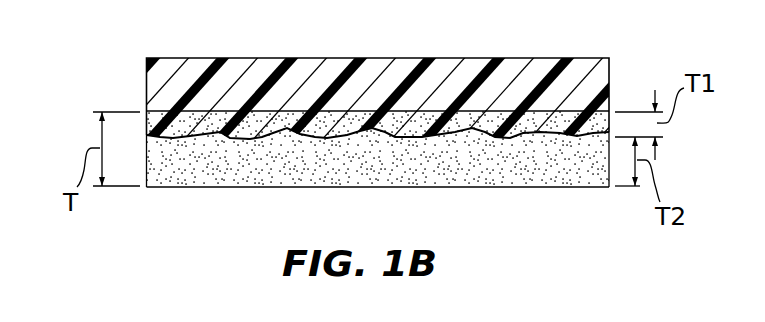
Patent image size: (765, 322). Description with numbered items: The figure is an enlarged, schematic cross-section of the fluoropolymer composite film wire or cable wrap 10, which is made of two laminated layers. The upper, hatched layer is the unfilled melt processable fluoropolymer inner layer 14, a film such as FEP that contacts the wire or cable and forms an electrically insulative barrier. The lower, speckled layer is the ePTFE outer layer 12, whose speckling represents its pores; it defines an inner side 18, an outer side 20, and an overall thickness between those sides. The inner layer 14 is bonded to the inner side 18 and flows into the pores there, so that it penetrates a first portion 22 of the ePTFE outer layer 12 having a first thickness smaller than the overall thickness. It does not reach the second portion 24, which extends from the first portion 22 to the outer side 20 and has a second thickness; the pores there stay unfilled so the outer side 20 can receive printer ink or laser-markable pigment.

The fluoropolymer composite film wire or cable wrap 10 is at (584, 43).
The ePTFE outer layer 12 is at (237, 188).
The melt processable fluoropolymer inner layer 14 is at (146, 86).
The inner side 18 is at (432, 110).
The outer side 20 is at (513, 188).
The first portion 22 is at (195, 120).
The second portion 24 is at (193, 172).